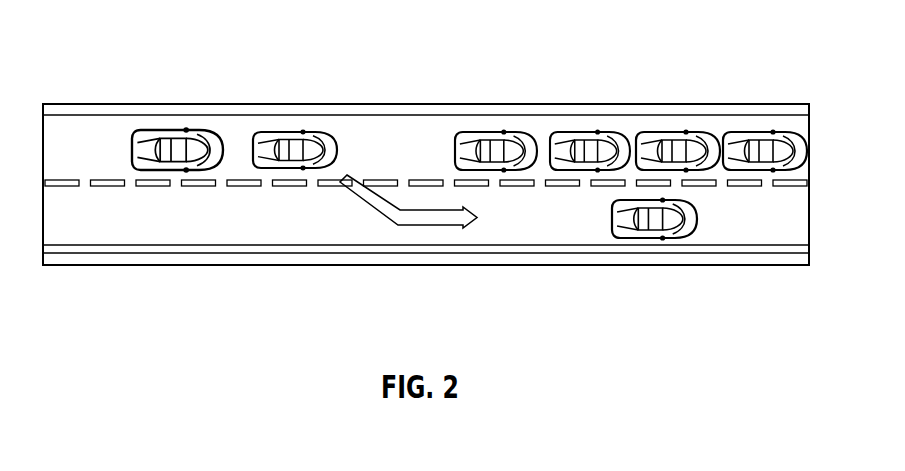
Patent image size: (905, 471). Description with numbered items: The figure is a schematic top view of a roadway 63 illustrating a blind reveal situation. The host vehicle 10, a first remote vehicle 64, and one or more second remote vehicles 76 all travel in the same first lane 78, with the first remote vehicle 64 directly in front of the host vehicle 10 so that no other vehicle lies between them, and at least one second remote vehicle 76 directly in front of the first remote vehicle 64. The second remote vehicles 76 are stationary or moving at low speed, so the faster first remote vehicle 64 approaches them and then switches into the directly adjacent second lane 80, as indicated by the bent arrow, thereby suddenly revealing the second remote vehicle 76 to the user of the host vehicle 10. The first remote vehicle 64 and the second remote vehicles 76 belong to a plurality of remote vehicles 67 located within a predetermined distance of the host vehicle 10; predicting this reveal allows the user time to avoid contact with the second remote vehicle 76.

The host vehicle 10 is at (172, 150).
The roadway 63 is at (405, 140).
The first remote vehicle 64 is at (298, 150).
The plurality of remote vehicles 67 is at (472, 89).
The second remote vehicle 76 is at (497, 150).
The first lane 78 is at (68, 138).
The second lane 80 is at (782, 222).